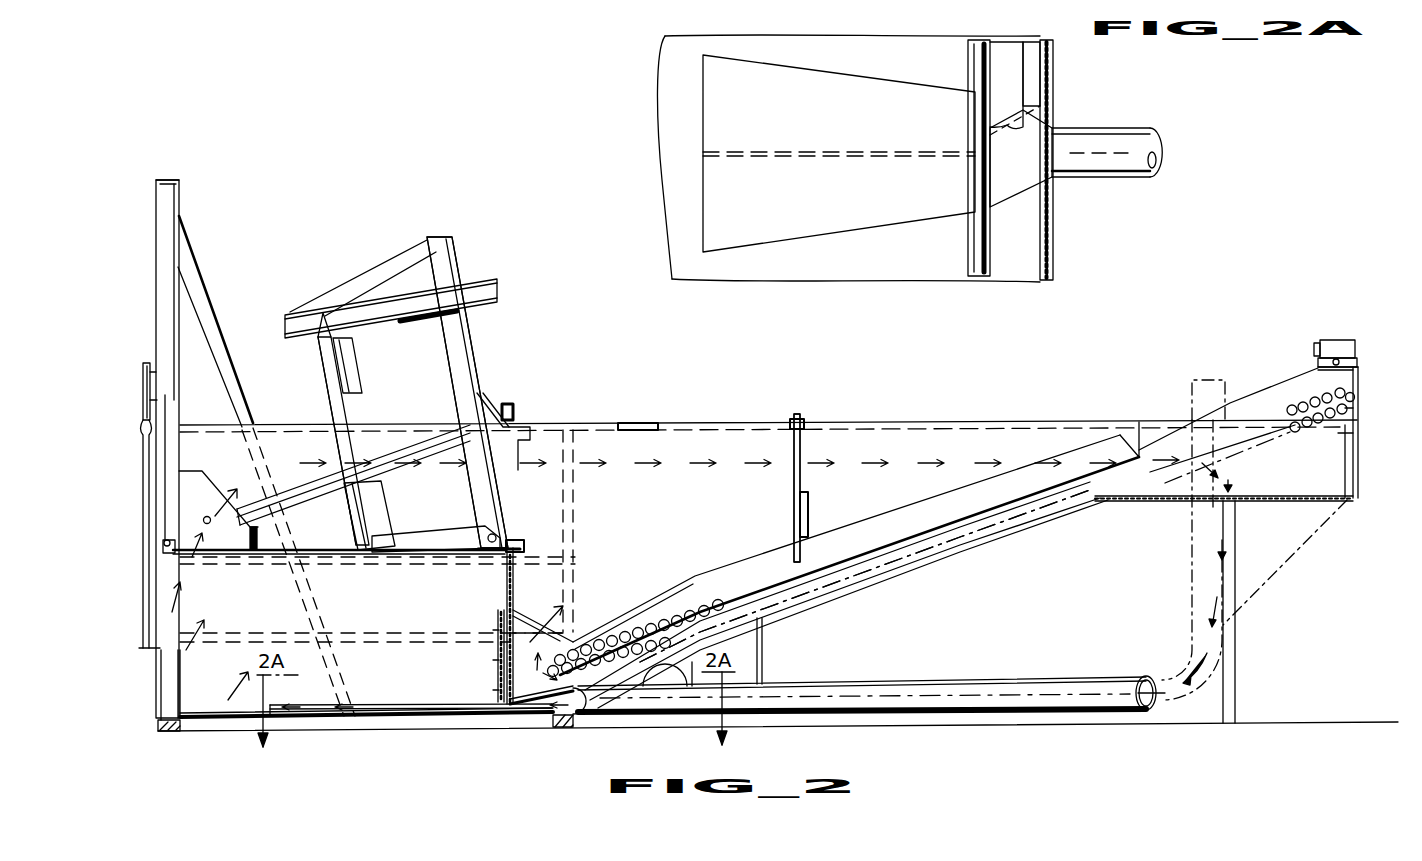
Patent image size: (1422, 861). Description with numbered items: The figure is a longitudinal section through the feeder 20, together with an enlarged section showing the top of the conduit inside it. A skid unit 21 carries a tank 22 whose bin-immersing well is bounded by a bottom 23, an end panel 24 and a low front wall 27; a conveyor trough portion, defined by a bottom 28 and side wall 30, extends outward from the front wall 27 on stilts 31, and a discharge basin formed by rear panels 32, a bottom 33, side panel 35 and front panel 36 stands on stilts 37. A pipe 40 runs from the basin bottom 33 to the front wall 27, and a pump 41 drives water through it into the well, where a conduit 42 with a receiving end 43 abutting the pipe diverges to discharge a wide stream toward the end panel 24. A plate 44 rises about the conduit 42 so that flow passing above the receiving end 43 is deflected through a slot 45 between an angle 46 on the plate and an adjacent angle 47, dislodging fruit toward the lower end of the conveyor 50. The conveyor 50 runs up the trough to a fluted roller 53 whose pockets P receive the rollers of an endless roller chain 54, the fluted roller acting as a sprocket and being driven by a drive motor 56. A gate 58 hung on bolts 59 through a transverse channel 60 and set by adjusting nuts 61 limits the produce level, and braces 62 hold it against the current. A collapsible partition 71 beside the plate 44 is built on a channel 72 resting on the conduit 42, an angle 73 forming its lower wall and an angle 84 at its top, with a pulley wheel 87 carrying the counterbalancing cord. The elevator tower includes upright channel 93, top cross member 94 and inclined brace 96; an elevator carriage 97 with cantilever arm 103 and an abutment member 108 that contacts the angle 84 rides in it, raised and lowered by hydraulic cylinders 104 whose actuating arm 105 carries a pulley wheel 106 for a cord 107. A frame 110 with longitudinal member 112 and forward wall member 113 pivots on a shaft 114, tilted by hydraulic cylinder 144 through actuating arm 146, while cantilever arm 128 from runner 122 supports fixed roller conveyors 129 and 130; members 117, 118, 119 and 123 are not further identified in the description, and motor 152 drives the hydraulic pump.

In FIG. 2, the apparatus 20 is at (645, 362).
In FIG. 2, the skid unit 21 is at (947, 726).
In FIG. 2, the tank 22 is at (880, 426).
In FIG. 2, the bottom 23 is at (184, 732).
In FIG. 2A, the bottom 23 is at (662, 101).
In FIG. 2, the end panel 24 is at (160, 677).
In FIG. 2, the low front wall 27 is at (576, 620).
In FIG. 2A, the low front wall 27 is at (1053, 100).
In FIG. 2, the bottom 28 is at (955, 552).
In FIG. 2, the side wall 30 is at (940, 423).
In FIG. 2, the stilts 31 is at (770, 624).
In FIG. 2, the rear panels 32 is at (1118, 425).
In FIG. 2, the bottom 33 is at (1140, 501).
In FIG. 2, the side panel 35 is at (1328, 437).
In FIG. 2, the front panel 36 is at (1360, 465).
In FIG. 2, the stilts 37 is at (1237, 648).
In FIG. 2, the pipe 40 is at (908, 679).
In FIG. 2A, the pipe 40 is at (1097, 173).
In FIG. 2, the pump 41 is at (1212, 378).
In FIG. 2, the conduit 42 is at (389, 706).
In FIG. 2A, the conduit 42 is at (812, 193).
In FIG. 2, the receiving end 43 is at (540, 717).
In FIG. 2A, the receiving end 43 is at (1028, 162).
In FIG. 2, the plate 44 is at (521, 714).
In FIG. 2, the slot 45 is at (549, 627).
In FIG. 2, the angle 46 is at (491, 643).
In FIG. 2A, the angle 46 is at (1003, 48).
In FIG. 2, the angle 47 is at (577, 640).
In FIG. 2A, the angle 47 is at (1043, 75).
In FIG. 2, the conveyor 50 is at (672, 604).
In FIG. 2, the fluted roller 53 is at (1355, 410).
In FIG. 2, the endless roller chain 54 is at (765, 577).
In FIG. 2, the drive motor 56 is at (1335, 342).
In FIG. 2, the gate 58 is at (810, 482).
In FIG. 2, the bolts 59 is at (793, 442).
In FIG. 2, the transverse channel 60 is at (792, 421).
In FIG. 2, the adjusting nuts 61 is at (804, 418).
In FIG. 2, the braces 62 is at (800, 518).
In FIG. 2, the collapsible partition 71 is at (502, 594).
In FIG. 2A, the channel 72 is at (968, 58).
In FIG. 2A, the angle 73 is at (972, 245).
In FIG. 2, the angle 84 is at (492, 555).
In FIG. 2, the pulley wheel 87 is at (518, 412).
In FIG. 2, the upright channel 93 is at (170, 200).
In FIG. 2, the top cross member 94 is at (168, 178).
In FIG. 2, the inclined brace 96 is at (186, 243).
In FIG. 2, the elevator carriage 97 is at (211, 479).
In FIG. 2, the cantilever arm 103 is at (267, 543).
In FIG. 2, the hydraulic cylinders 104 is at (150, 464).
In FIG. 2, the actuating arm 105 is at (156, 409).
In FIG. 2, the pulley wheel 106 is at (148, 372).
In FIG. 2, the cord 107 is at (144, 397).
In FIG. 2, the abutment member 108 is at (519, 547).
In FIG. 2, the frame 110 is at (480, 355).
In FIG. 2, the longitudinal member 112 is at (462, 337).
In FIG. 2, the second frame member 113 is at (397, 553).
In FIG. 2, the shaft 114 is at (490, 535).
In FIG. 2, the beam 117 is at (493, 291).
In FIG. 2, the brace 118 is at (403, 258).
In FIG. 2, the post 119 is at (320, 357).
In FIG. 2, the runner 122 is at (362, 320).
In FIG. 2, the hatched joint 123 is at (432, 330).
In FIG. 2, the cantilever arm 128 is at (333, 412).
In FIG. 2, the fixed roller conveyor 129 is at (355, 373).
In FIG. 2, the fixed roller conveyor 130 is at (377, 488).
In FIG. 2, the hydraulic cylinder 144 is at (308, 488).
In FIG. 2, the actuating arm 146 is at (398, 468).
In FIG. 2, the motor 152 is at (680, 660).
In FIG. 2, the pockets P is at (1330, 393).